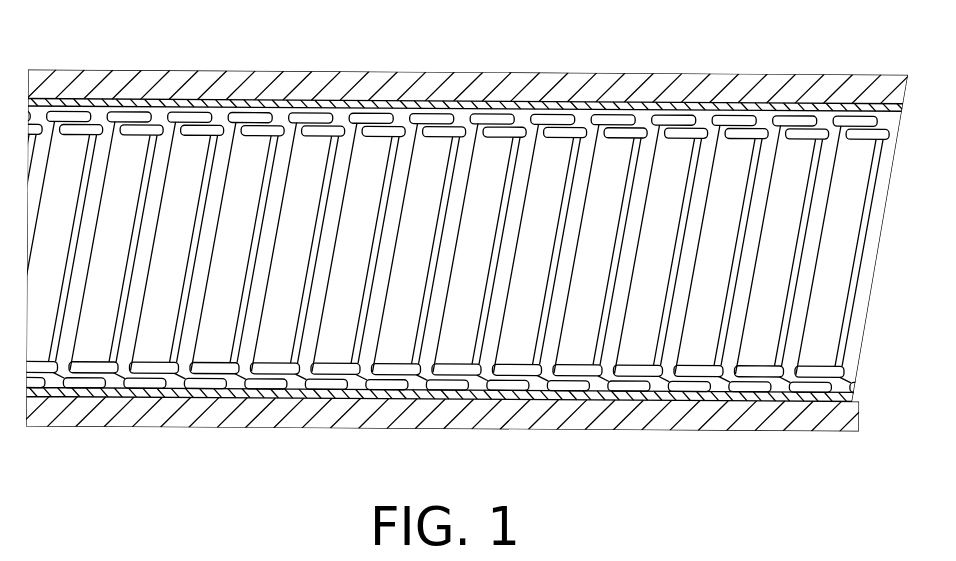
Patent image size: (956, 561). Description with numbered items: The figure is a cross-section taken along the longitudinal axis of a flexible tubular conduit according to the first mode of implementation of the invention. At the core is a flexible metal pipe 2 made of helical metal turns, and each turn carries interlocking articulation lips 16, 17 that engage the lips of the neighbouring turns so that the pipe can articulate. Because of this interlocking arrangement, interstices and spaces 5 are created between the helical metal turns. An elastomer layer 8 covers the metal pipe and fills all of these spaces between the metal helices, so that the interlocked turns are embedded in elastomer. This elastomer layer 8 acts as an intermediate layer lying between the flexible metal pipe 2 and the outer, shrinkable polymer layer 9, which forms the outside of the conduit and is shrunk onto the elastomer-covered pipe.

The flexible metal pipe 2 is at (313, 159).
The interstices and spaces 5 is at (402, 122).
The elastomer layer 8 is at (466, 106).
The shrinkable polymer layer 9 is at (640, 95).
The interlocking articulation lip 16 is at (170, 115).
The interlocking articulation lip 17 is at (248, 100).